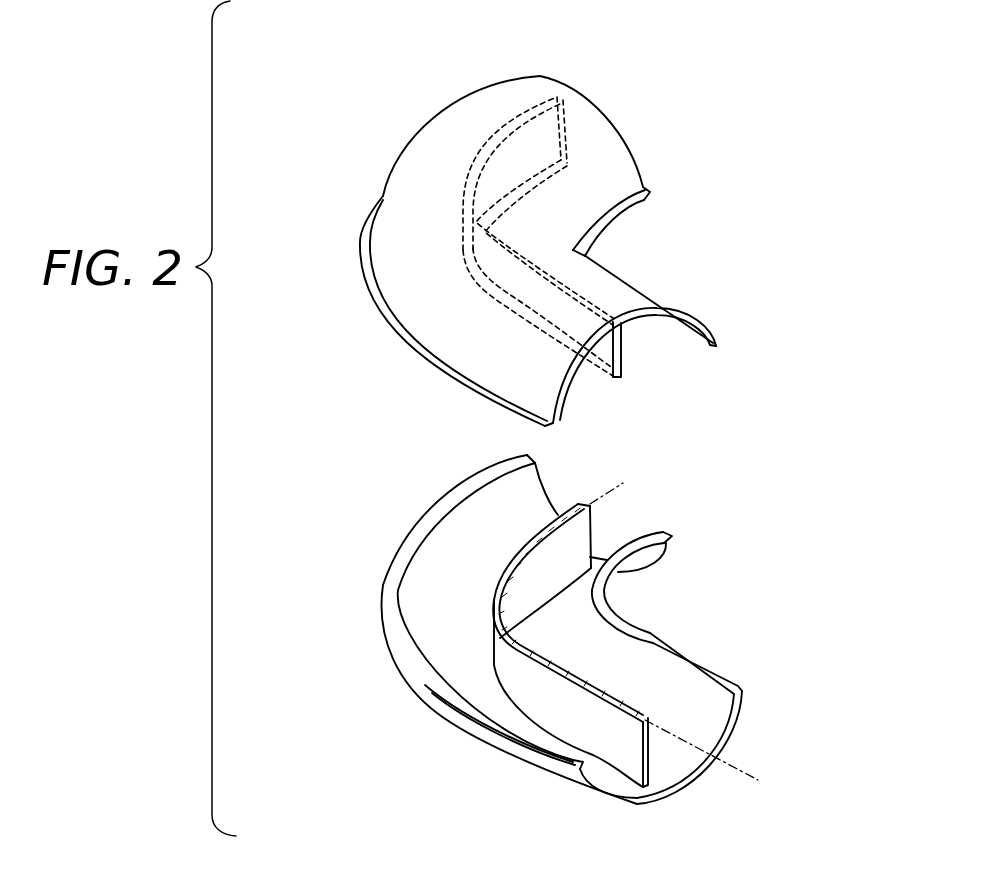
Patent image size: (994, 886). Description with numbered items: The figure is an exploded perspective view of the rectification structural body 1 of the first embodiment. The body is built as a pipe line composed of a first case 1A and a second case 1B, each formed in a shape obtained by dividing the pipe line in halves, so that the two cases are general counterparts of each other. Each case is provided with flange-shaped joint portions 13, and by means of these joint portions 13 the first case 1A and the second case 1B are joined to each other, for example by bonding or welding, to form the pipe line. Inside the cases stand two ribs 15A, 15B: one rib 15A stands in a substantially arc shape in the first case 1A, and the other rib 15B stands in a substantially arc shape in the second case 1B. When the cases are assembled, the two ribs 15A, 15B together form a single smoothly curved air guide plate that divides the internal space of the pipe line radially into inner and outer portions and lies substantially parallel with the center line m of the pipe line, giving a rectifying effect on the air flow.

The rectification structural body 1 is at (597, 37).
The first case 1A is at (490, 758).
The second case 1B is at (397, 347).
The flange-shaped joint portions 13 is at (362, 279).
The rib 15A is at (545, 664).
The rib 15B is at (622, 348).
The center line m is at (689, 641).